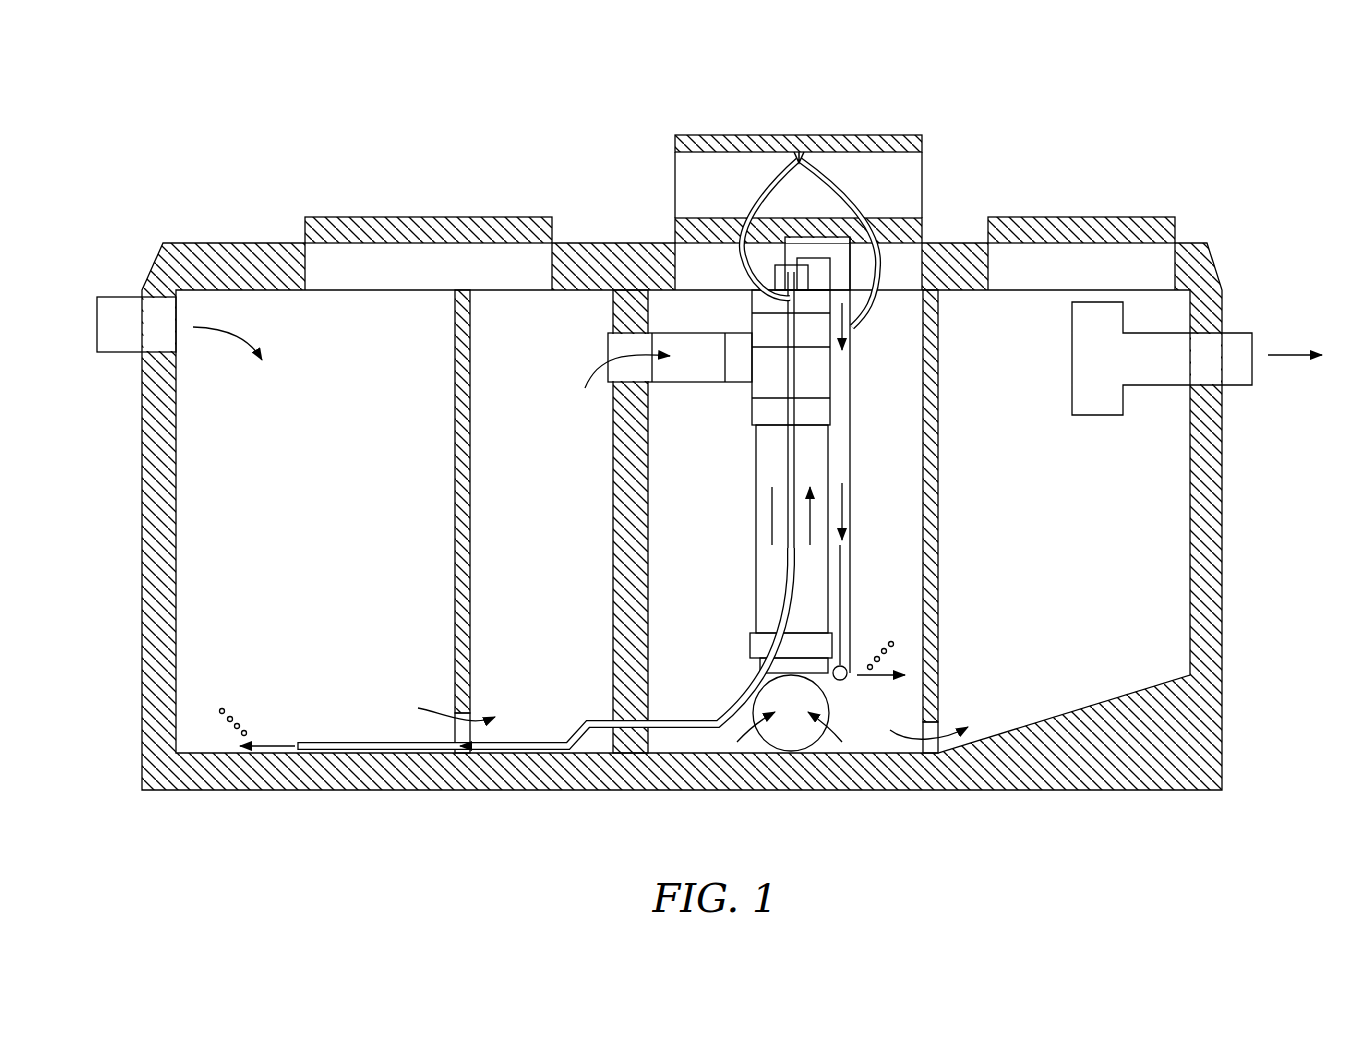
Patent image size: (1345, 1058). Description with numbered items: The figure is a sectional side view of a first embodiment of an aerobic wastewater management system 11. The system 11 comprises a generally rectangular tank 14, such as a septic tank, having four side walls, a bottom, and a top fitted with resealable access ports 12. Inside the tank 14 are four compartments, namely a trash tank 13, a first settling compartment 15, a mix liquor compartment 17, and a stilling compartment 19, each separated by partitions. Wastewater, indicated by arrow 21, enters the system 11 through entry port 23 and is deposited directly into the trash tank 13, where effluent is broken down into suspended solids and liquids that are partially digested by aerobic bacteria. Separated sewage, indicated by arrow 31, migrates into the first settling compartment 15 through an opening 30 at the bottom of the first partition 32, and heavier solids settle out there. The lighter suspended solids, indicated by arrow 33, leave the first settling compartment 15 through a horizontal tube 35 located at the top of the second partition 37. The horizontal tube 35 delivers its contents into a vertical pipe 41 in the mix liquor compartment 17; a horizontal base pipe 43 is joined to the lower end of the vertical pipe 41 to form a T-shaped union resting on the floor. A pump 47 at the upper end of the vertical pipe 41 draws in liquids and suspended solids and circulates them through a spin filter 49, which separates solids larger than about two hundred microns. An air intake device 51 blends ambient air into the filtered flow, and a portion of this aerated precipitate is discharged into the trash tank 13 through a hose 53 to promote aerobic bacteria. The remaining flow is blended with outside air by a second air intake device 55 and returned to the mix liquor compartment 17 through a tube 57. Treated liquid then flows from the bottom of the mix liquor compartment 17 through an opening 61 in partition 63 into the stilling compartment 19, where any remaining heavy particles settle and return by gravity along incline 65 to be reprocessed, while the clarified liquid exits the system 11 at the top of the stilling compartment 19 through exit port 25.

The aerobic wastewater management system 11 is at (1212, 129).
The resealable access ports 12 is at (380, 218).
The trash tank 13 is at (291, 566).
The tank 14 is at (1215, 582).
The first settling compartment 15 is at (531, 566).
The mix liquor compartment 17 is at (684, 566).
The stilling compartment 19 is at (1051, 566).
The wastewater 21 is at (228, 332).
The entry port 23 is at (125, 300).
The exit port 25 is at (1237, 343).
The opening 30 is at (455, 735).
The separated sewage 31 is at (477, 724).
The first partition 32 is at (455, 640).
The lighter solids 33 is at (592, 380).
The horizontal tube 35 is at (690, 372).
The second partition 37 is at (615, 442).
The vertical pipe 41 is at (758, 452).
The horizontal base pipe 43 is at (834, 688).
The pump 47 is at (813, 330).
The spin filter 49 is at (775, 280).
The air intake device 51 is at (812, 150).
The hose 53 is at (790, 593).
The second air intake device 55 is at (868, 322).
The tube 57 is at (840, 612).
The opening 61 is at (940, 720).
The partition 63 is at (932, 615).
The incline 65 is at (1112, 720).